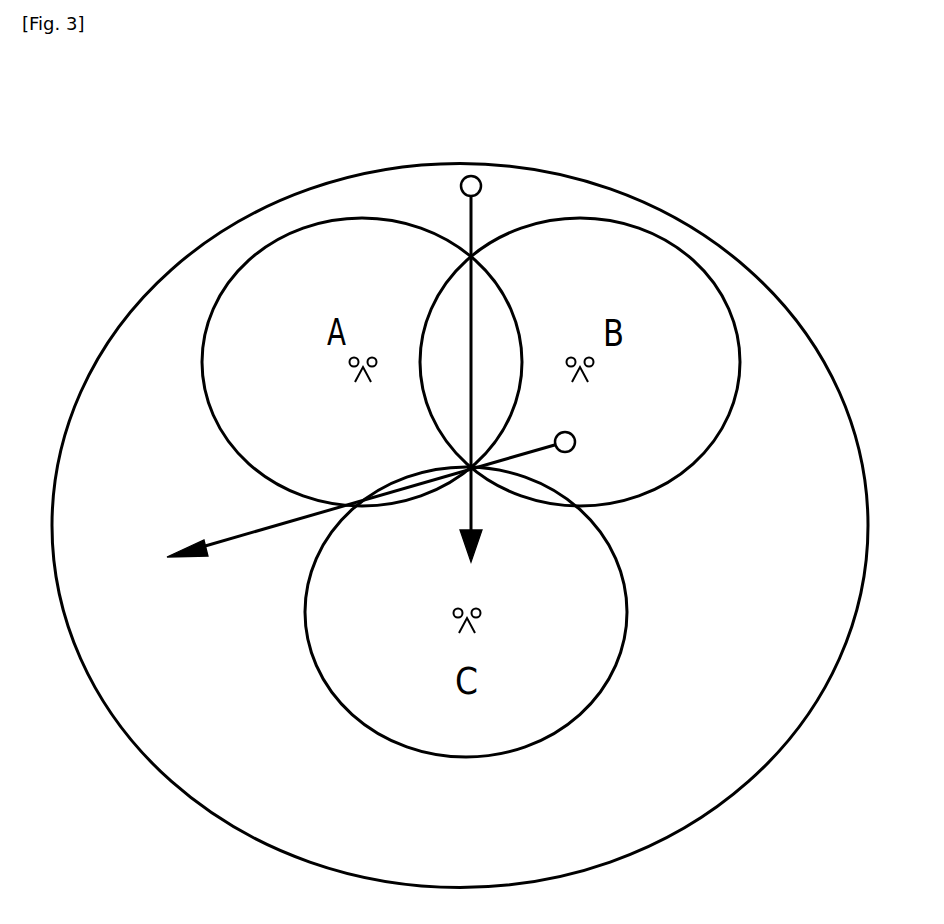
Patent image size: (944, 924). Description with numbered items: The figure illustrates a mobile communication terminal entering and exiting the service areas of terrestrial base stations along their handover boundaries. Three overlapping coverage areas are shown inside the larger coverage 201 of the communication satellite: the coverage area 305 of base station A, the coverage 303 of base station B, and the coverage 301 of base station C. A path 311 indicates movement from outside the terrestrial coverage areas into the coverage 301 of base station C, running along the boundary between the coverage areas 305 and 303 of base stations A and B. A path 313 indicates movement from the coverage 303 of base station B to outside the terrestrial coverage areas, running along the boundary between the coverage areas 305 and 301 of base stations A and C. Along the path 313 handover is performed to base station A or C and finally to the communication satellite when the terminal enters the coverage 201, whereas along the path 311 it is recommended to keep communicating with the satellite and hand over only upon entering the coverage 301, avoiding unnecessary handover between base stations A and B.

The coverage of the communication satellite 201 is at (792, 312).
The coverage of base station C 301 is at (627, 590).
The coverage of base station B 303 is at (673, 243).
The coverage area of base station A 305 is at (305, 228).
The path 311 is at (473, 218).
The path 313 is at (232, 540).